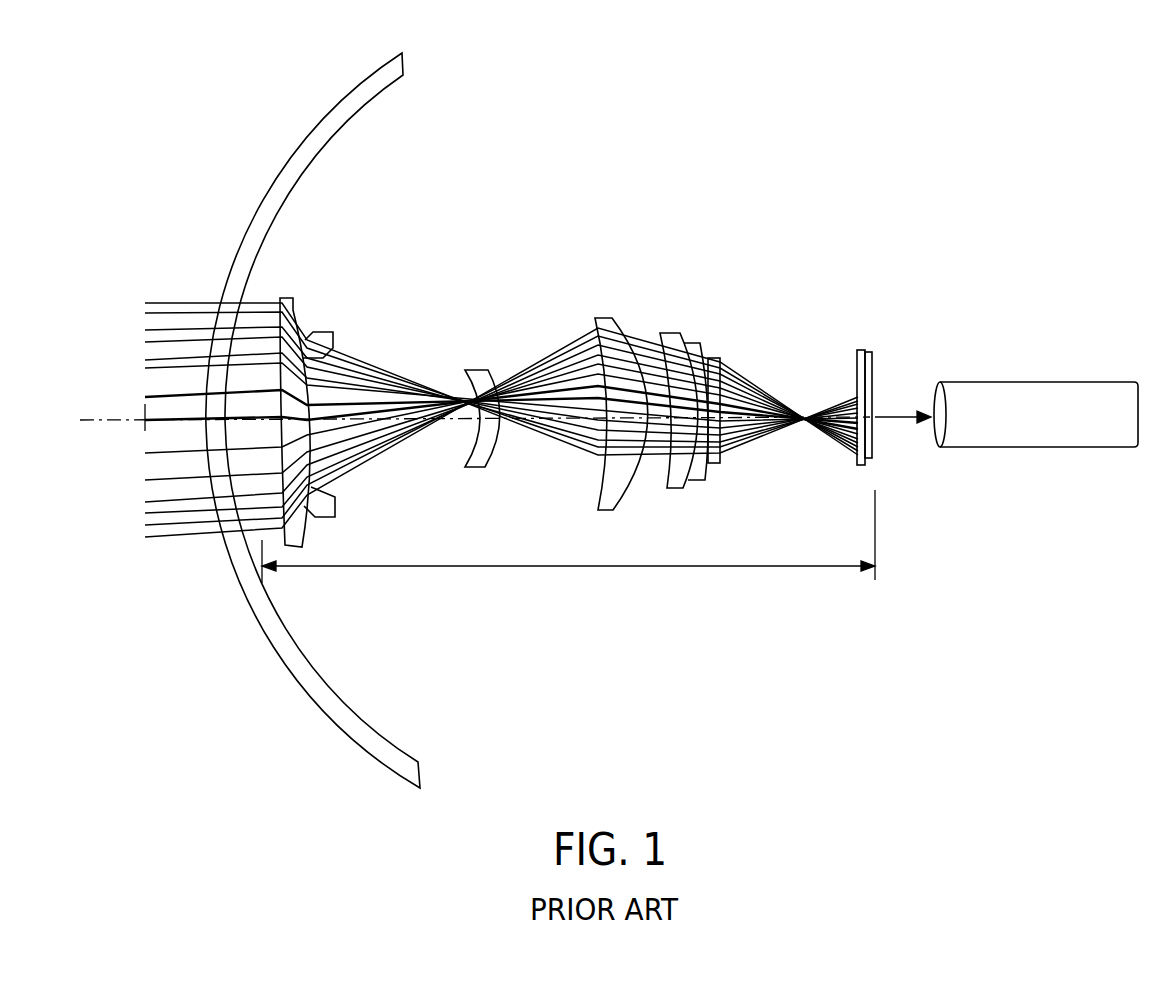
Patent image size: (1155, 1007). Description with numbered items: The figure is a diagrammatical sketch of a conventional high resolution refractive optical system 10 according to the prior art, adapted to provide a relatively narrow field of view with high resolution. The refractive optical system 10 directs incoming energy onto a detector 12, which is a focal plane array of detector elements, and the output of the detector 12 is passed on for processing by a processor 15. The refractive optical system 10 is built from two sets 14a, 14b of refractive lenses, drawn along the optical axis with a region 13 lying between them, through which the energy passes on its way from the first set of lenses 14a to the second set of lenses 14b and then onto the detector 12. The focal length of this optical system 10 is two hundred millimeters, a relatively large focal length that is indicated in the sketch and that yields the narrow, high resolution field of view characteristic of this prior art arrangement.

The refractive optical system 10 is at (846, 209).
The detector 12 is at (872, 386).
The region 13 is at (434, 364).
The first set of refractive lenses 14a is at (334, 311).
The second set of refractive lenses 14b is at (649, 312).
The processor 15 is at (1048, 382).